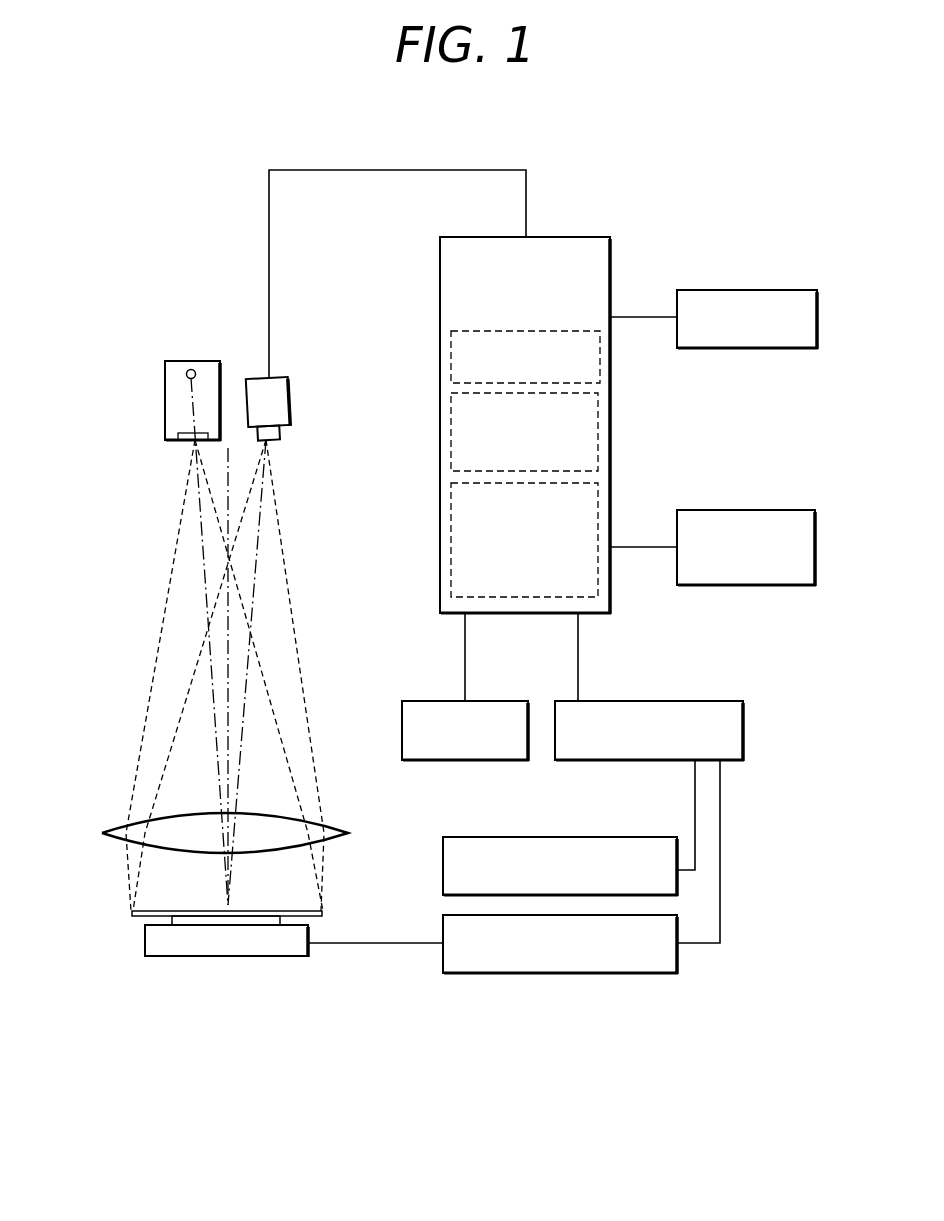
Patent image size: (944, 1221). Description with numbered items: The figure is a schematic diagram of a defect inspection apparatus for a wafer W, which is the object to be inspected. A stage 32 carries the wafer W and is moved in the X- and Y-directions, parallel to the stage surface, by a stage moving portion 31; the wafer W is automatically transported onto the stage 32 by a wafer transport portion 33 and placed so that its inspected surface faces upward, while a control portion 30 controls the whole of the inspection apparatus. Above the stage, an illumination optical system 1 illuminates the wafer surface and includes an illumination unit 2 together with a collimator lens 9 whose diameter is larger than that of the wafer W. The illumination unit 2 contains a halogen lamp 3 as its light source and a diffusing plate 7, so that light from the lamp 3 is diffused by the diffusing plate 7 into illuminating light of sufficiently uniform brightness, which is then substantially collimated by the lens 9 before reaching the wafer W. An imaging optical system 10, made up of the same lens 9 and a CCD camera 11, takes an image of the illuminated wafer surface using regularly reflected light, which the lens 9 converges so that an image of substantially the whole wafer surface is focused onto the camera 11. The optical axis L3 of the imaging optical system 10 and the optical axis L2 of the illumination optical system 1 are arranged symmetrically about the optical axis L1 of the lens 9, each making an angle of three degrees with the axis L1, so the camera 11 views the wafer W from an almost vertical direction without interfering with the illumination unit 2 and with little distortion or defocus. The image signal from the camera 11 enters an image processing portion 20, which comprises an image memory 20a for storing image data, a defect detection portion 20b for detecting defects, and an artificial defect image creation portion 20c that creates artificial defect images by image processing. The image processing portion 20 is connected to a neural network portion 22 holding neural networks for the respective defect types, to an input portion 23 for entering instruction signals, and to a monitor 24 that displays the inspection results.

The illumination optical system 1 is at (152, 520).
The illumination unit 2 is at (165, 395).
The halogen lamp 3 is at (191, 369).
The diffusing plate 7 is at (186, 440).
The collimator lens 9 is at (349, 830).
The imaging optical system 10 is at (296, 493).
The CCD camera 11 is at (278, 403).
The image processing portion 20 is at (590, 237).
The image memory 20a is at (600, 357).
The defect detection portion 20b is at (598, 437).
The artificial defect image creation portion 20c is at (527, 597).
The neural network portion 22 is at (800, 510).
The input portion 23 is at (797, 290).
The monitor 24 is at (528, 748).
The control portion 30 is at (730, 701).
The stage moving portion 31 is at (620, 973).
The stage 32 is at (283, 956).
The wafer transport portion 33 is at (640, 838).
The wafer W is at (323, 913).
The optical axis of the lens L1 is at (229, 672).
The optical axis of the illumination optical system L2 is at (205, 597).
The optical axis of the imaging optical system L3 is at (254, 582).